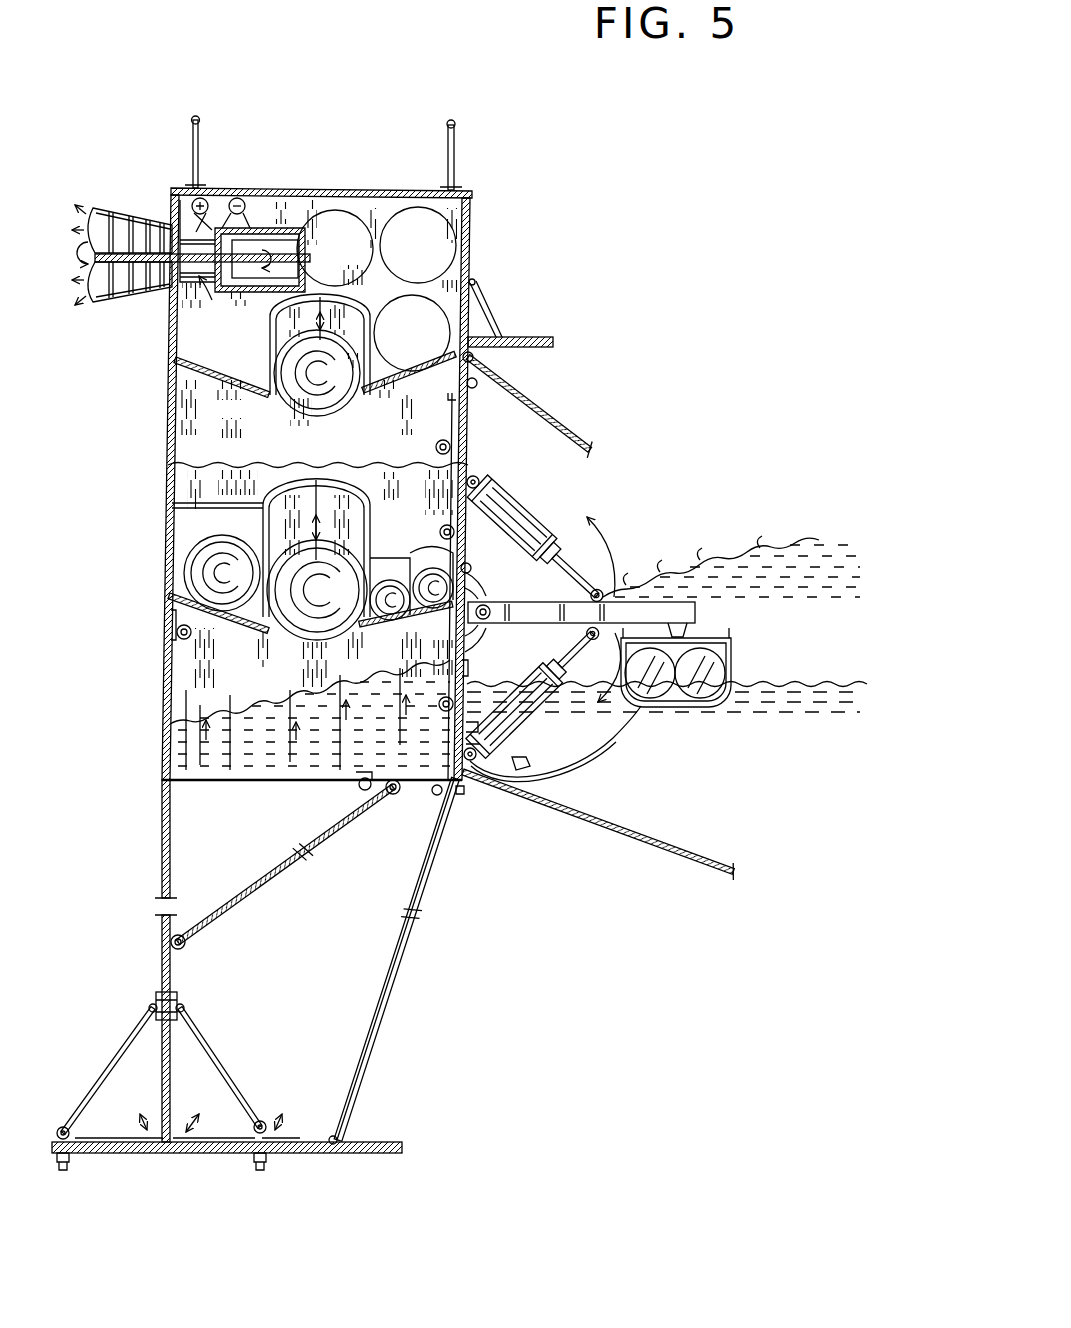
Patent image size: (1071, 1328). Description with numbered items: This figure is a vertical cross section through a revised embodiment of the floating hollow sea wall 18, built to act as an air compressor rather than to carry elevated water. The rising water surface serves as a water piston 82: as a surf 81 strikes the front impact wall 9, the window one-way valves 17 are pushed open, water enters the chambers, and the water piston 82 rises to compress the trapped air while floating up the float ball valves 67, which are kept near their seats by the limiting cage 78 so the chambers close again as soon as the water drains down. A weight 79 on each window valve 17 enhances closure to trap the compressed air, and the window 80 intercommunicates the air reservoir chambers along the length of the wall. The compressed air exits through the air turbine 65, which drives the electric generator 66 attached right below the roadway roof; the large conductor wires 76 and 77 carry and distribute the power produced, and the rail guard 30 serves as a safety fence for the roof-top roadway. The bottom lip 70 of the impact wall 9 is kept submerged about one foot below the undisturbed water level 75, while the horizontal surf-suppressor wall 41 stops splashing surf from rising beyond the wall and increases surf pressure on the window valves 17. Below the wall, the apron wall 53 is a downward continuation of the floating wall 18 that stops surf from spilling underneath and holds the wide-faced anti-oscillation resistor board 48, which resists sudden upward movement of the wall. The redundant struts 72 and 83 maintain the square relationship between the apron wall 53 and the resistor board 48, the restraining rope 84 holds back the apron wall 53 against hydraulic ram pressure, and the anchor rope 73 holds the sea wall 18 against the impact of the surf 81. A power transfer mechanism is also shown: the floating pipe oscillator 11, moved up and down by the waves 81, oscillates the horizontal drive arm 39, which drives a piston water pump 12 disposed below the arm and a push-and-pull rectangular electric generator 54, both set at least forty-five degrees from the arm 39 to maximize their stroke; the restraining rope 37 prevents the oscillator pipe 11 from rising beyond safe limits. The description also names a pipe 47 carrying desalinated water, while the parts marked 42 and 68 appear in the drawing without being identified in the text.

The front impact wall 9 is at (477, 384).
The floating pipe oscillator 11 is at (716, 708).
The piston water pump 12 is at (512, 722).
The window one-way valve 17 is at (466, 420).
The floating sea wall 18 is at (368, 190).
The rail guard 30 is at (199, 121).
The restraining rope 37 is at (622, 739).
The horizontal drive arm 39 is at (654, 609).
The horizontal surf-suppressor wall 41 is at (525, 337).
The pivot 42 is at (390, 792).
The pipe 47 is at (519, 766).
The anti-oscillation resistor board 48 is at (62, 1136).
The apron wall 53 is at (162, 862).
The push-and-pull rectangular electric generator 54 is at (515, 503).
The air turbine 65 is at (140, 298).
The electric generator 66 is at (272, 230).
The float ball valve 67 is at (350, 366).
The deflector plate 68 is at (196, 378).
The bottom lip 70 is at (362, 781).
The redundant strut 72 is at (128, 1024).
The anchor rope 73 is at (502, 386).
The undisturbed water level 75 is at (742, 682).
The conductor wire 76 is at (205, 200).
The conductor wire 77 is at (240, 200).
The limiting cage 78 is at (270, 345).
The weight 79 is at (440, 441).
The window 80 is at (337, 225).
The surf 81 is at (760, 548).
The water piston 82 is at (246, 766).
The redundant strut 83 is at (405, 942).
The restraining rope 84 is at (312, 846).